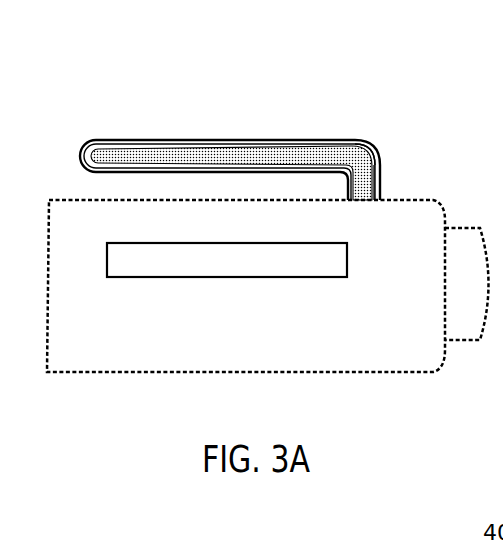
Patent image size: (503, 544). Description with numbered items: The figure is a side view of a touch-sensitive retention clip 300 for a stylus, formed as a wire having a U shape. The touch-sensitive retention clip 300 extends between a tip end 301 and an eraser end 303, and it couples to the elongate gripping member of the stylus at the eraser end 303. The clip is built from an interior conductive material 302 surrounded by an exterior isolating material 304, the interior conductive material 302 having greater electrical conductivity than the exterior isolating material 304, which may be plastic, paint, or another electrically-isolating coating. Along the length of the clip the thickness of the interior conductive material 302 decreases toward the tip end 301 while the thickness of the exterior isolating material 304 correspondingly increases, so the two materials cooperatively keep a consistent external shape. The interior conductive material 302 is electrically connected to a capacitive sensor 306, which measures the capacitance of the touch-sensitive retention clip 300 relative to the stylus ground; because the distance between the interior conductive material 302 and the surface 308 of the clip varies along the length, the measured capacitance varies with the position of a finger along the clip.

The touch-sensitive retention clip 300 is at (130, 61).
The tip end 301 is at (93, 185).
The interior conductive material 302 is at (335, 153).
The eraser end 303 is at (391, 178).
The exterior isolating material 304 is at (110, 150).
The capacitive sensor 306 is at (361, 200).
The surface 308 is at (195, 140).